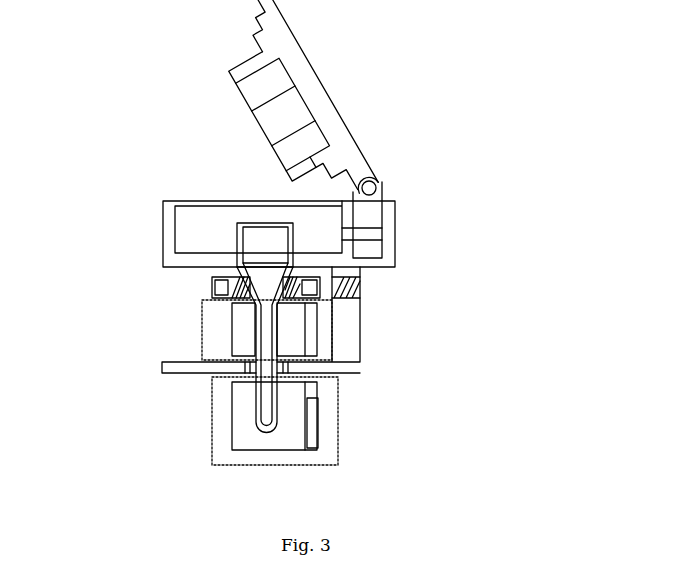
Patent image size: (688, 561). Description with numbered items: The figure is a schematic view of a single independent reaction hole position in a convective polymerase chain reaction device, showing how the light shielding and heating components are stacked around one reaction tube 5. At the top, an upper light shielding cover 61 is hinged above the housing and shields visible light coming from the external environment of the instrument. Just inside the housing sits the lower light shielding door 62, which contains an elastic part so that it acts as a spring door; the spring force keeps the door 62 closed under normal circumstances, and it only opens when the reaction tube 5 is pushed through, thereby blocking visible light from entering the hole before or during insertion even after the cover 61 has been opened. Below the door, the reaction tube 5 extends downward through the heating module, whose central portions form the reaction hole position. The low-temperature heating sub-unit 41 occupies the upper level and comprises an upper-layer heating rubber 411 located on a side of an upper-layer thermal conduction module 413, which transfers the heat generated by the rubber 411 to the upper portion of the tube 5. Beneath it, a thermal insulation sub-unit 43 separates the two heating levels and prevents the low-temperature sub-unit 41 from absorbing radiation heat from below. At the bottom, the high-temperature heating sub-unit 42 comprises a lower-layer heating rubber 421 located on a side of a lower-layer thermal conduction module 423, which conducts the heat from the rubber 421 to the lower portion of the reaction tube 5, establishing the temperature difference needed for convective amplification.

The reaction tube 5 is at (250, 238).
The upper light shielding cover 61 is at (322, 108).
The lower light shielding door 62 is at (298, 287).
The low-temperature heating sub-unit 41 is at (242, 309).
The upper-layer heating rubber 411 is at (313, 327).
The upper-layer thermal conduction module 413 is at (247, 328).
The thermal insulation sub-unit 43 is at (355, 354).
The high-temperature heating sub-unit 42 is at (281, 436).
The lower-layer heating rubber 421 is at (318, 428).
The lower-layer thermal conduction module 423 is at (247, 423).